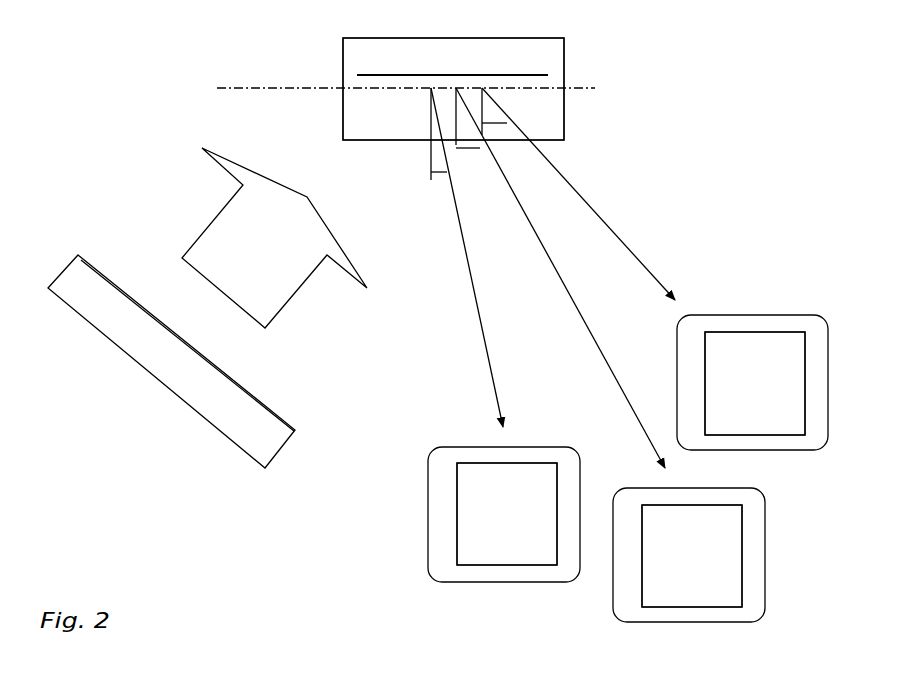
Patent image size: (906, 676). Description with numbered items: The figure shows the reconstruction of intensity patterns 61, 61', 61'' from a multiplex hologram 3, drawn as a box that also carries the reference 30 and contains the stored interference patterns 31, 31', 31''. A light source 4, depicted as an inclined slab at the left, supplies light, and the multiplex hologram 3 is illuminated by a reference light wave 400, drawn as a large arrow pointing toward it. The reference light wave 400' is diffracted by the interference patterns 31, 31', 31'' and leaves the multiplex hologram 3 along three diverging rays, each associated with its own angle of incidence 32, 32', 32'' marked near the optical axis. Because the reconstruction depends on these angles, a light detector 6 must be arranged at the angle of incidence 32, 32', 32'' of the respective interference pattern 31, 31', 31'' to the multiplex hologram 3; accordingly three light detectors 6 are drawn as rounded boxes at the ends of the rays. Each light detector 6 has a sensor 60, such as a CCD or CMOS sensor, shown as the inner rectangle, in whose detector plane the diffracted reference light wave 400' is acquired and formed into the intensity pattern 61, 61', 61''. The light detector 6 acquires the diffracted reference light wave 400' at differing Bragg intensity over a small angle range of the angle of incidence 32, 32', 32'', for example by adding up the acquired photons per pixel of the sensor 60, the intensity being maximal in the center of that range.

The multiplex hologram 3 is at (597, 72).
The light source unit 30 is at (546, 89).
The interference pattern 31 is at (394, 115).
The interference pattern 31' is at (446, 98).
The interference pattern 31'' is at (515, 93).
The angle of incidence 32 is at (455, 257).
The angle of incidence 32' is at (560, 278).
The angle of incidence 32'' is at (578, 194).
The light source 4 is at (133, 350).
The reference light wave 400 is at (235, 238).
The diffracted reference light wave 400' is at (678, 191).
The light detector 6 is at (445, 512).
The sensor 60 is at (569, 433).
The intensity pattern 61 is at (507, 514).
The intensity pattern 61' is at (692, 556).
The intensity pattern 61'' is at (755, 383).